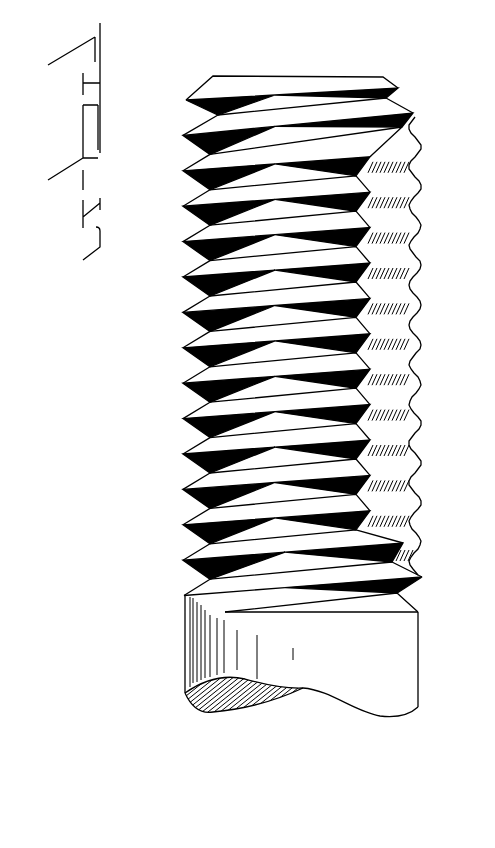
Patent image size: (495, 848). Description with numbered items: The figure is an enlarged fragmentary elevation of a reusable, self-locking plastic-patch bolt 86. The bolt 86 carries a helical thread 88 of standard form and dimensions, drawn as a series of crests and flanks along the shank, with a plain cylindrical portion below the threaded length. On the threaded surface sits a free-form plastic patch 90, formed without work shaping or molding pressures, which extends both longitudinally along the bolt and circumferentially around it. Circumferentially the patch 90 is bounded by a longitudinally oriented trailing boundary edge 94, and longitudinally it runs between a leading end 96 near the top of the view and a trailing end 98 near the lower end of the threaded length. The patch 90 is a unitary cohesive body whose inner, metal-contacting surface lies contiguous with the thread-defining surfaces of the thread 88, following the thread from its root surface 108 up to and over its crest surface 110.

The bolt 86 is at (184, 626).
The helical thread 88 is at (184, 526).
The plastic patch 90 is at (415, 393).
The trailing boundary edge 94 is at (357, 354).
The leading end 96 is at (412, 124).
The trailing end 98 is at (422, 578).
The root surface 108 is at (185, 397).
The crest surface 110 is at (185, 330).